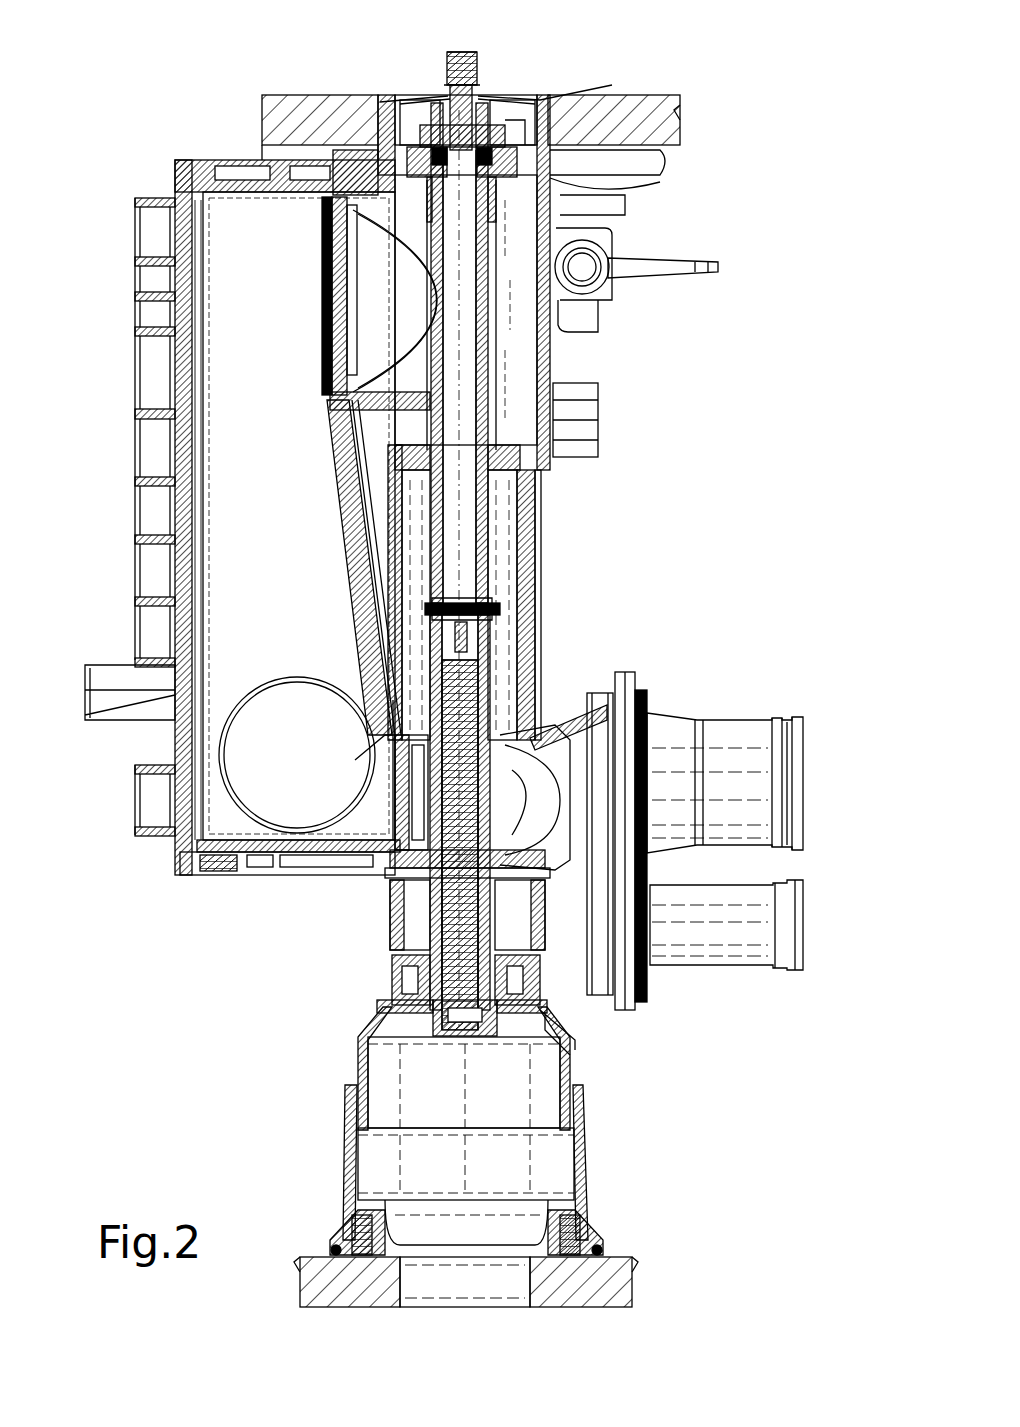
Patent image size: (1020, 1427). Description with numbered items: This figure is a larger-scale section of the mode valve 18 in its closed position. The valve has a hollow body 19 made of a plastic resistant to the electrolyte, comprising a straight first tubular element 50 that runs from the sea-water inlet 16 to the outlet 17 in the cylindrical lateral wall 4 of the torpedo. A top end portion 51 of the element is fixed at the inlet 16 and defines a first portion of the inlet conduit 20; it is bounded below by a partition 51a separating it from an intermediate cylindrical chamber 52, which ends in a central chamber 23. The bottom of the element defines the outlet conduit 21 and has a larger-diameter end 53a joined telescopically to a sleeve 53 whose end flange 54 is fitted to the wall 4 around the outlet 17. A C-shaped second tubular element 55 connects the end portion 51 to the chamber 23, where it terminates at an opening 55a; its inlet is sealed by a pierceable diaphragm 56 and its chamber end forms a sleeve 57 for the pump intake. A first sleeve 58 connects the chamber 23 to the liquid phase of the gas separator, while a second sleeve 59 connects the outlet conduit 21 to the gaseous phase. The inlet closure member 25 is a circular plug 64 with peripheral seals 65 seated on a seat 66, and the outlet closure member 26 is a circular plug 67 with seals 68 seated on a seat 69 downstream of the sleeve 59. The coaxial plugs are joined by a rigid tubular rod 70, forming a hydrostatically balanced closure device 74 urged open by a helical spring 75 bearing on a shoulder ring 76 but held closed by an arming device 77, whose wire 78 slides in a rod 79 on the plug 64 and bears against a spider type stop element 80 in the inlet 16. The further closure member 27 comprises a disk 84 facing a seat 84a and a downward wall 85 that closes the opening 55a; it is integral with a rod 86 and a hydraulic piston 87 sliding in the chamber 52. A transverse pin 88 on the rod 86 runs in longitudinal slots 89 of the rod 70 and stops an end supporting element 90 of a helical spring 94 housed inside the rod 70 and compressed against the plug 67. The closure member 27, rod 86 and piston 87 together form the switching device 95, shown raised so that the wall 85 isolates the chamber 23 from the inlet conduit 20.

The lateral wall 4 is at (272, 112).
The inlet 16 is at (330, 130).
The outlet 17 is at (520, 1283).
The mode valve 18 is at (660, 505).
The hollow body 19 is at (172, 856).
The inlet conduit 20 is at (190, 410).
The outlet conduit 21 is at (560, 1062).
The central chamber 23 is at (510, 735).
The closure member 25 is at (517, 133).
The closure member 26 is at (405, 1022).
The closure member 27 is at (395, 781).
The first tubular element 50 is at (540, 573).
The top end portion 51 is at (608, 248).
The partition 51a is at (545, 470).
The intermediate cylindrical chamber 52 is at (517, 520).
The sleeve 53 is at (590, 1190).
The larger-diameter end 53a is at (365, 1110).
The end flange 54 is at (605, 1255).
The second tubular element 55 is at (160, 500).
The opening 55a is at (393, 740).
The diaphragm 56 is at (325, 270).
The sleeve 57 is at (265, 720).
The first sleeve 58 is at (742, 735).
The second sleeve 59 is at (727, 958).
The circular plug 64 is at (498, 140).
The peripheral seals 65 is at (600, 182).
The seat 66 is at (388, 115).
The circular plug 67 is at (400, 955).
The peripheral seals 68 is at (395, 983).
The seat 69 is at (555, 1005).
The rigid tubular rod 70 is at (590, 316).
The closure device 74 is at (500, 358).
The helical spring 75 is at (425, 902).
The shoulder ring 76 is at (492, 745).
The arming device 77 is at (432, 98).
The wire 78 is at (560, 85).
The rod 79 is at (470, 68).
The spider type stop element 80 is at (557, 130).
The disk 84 is at (537, 717).
The seat 84a is at (590, 812).
The wall 85 is at (395, 818).
The rod 86 is at (484, 622).
The hydraulic piston 87 is at (395, 505).
The transverse pin 88 is at (430, 610).
The longitudinal slots 89 is at (482, 416).
The end supporting element 90 is at (455, 624).
The helical spring 94 is at (440, 870).
The switching device 95 is at (505, 685).